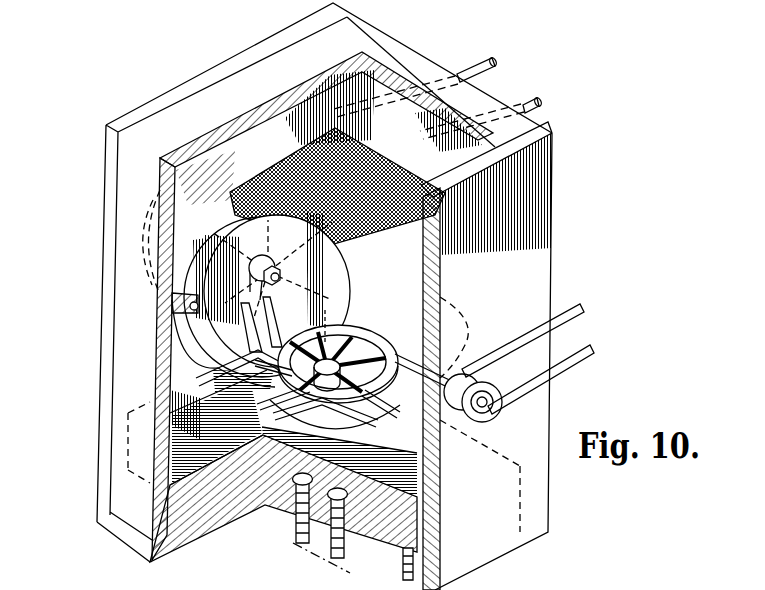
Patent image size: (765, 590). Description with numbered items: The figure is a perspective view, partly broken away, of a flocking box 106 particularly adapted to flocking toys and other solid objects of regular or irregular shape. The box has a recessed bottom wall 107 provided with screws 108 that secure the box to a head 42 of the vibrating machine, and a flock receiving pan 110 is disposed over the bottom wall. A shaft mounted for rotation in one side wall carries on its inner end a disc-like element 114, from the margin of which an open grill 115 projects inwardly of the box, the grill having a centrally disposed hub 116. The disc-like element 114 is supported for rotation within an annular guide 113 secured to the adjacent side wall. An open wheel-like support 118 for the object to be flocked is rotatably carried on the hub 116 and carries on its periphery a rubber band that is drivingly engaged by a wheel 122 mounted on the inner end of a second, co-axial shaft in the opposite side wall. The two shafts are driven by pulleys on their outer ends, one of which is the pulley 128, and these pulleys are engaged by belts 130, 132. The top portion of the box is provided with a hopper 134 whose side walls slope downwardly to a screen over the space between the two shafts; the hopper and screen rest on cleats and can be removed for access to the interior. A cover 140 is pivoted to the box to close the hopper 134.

The head 42 is at (314, 551).
The flocking box 106 is at (125, 348).
The recessed bottom wall 107 is at (205, 505).
The screws 108 is at (300, 507).
The flock receiving pan 110 is at (190, 450).
The annular guide 113 is at (205, 322).
The disc-like element 114 is at (213, 275).
The open grill 115 is at (343, 420).
The hub 116 is at (330, 360).
The open wheel-like support 118 is at (418, 318).
The wheel 122 is at (478, 338).
The pulley 128 is at (485, 418).
The belt 130 is at (522, 107).
The belt 132 is at (590, 340).
The hopper 134 is at (258, 137).
The cover 140 is at (147, 138).